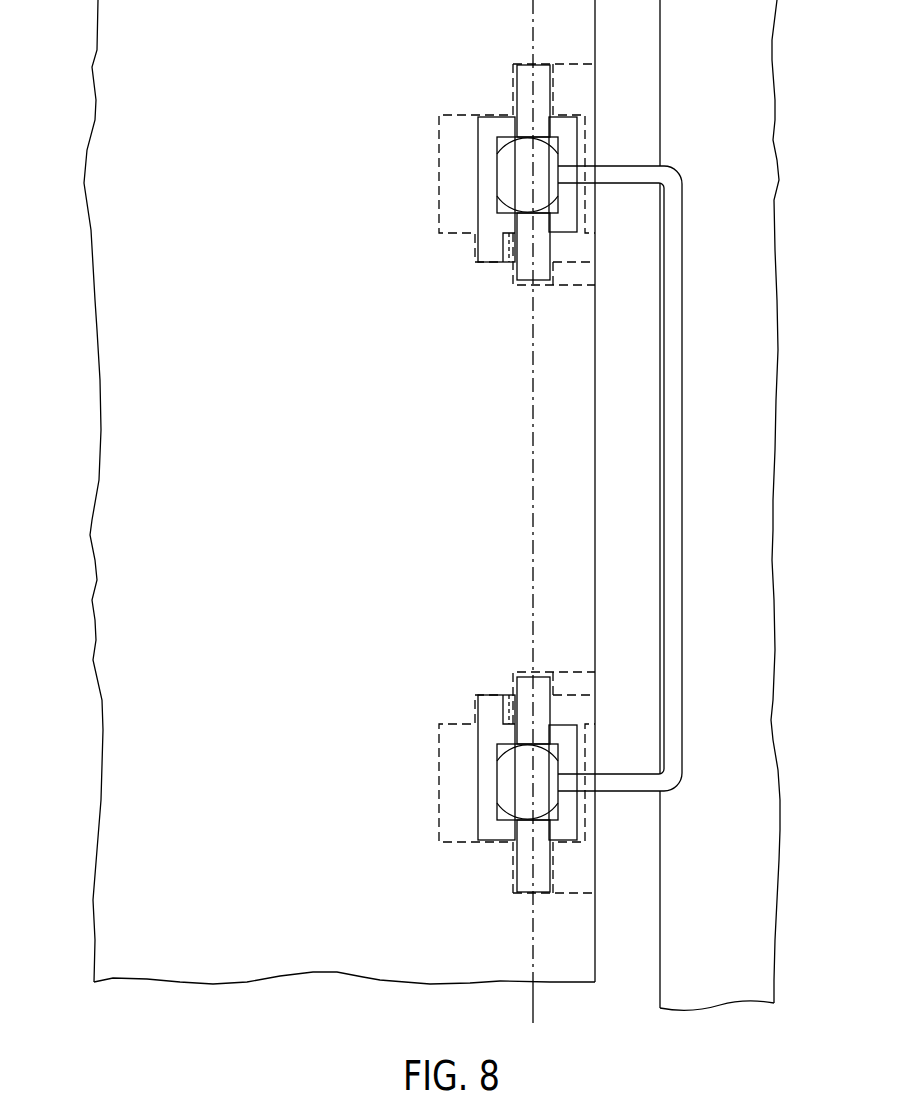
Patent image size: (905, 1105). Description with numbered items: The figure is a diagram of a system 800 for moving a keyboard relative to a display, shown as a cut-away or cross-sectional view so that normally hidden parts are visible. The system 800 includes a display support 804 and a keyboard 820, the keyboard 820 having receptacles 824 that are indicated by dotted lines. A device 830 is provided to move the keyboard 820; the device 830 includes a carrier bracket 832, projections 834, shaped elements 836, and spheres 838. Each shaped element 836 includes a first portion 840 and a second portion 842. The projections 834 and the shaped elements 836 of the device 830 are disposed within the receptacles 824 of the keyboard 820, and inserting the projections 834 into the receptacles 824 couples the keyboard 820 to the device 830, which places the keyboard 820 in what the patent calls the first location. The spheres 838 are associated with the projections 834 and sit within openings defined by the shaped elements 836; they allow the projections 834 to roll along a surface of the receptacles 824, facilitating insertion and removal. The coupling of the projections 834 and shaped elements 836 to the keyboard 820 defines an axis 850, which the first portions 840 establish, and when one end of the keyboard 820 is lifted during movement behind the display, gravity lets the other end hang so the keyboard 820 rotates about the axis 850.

The system 800 is at (252, 1040).
The display support 804 is at (775, 527).
The keyboard 820 is at (95, 530).
The receptacles 824 is at (617, 118).
The device 830 is at (658, 478).
The carrier bracket 832 is at (682, 245).
The projections 834 is at (473, 478).
The shaped elements 836 is at (478, 170).
The spheres 838 is at (520, 206).
The first portions 840 is at (532, 65).
The second portions 842 is at (495, 262).
The axis 850 is at (533, 998).